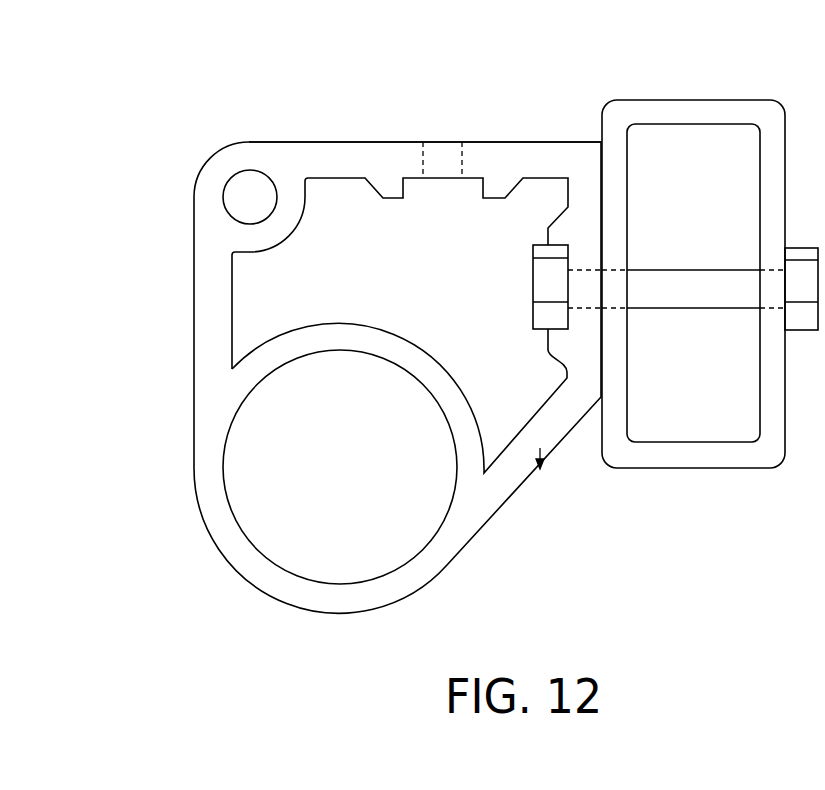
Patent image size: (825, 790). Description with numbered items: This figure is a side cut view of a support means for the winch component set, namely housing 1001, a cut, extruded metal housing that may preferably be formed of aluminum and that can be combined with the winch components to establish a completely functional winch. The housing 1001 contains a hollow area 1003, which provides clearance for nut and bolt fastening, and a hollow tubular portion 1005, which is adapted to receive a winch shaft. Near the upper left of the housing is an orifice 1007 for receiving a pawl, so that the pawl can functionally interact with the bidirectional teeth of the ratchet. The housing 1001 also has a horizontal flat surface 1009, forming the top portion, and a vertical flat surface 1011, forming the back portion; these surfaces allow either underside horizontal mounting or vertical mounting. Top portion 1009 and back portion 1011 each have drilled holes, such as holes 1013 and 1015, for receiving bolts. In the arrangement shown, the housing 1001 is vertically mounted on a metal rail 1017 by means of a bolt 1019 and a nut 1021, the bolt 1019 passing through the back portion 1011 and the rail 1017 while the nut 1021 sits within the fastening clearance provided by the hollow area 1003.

The housing 1001 is at (147, 309).
The hollow area 1003 is at (397, 276).
The hollow tubular portion 1005 is at (445, 422).
The orifice 1007 is at (225, 195).
The horizontal flat surface 1009 is at (508, 140).
The vertical flat surface 1011 is at (600, 350).
The drilled hole 1013 is at (428, 140).
The drilled hole 1015 is at (588, 263).
The metal rail 1017 is at (661, 105).
The bolt 1019 is at (673, 300).
The nut 1021 is at (533, 268).